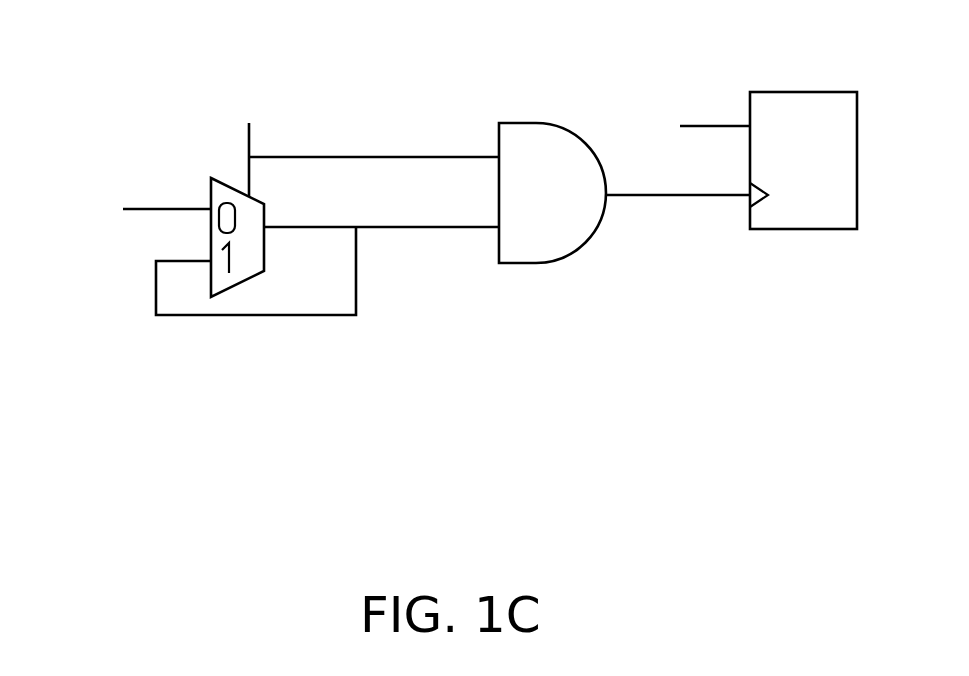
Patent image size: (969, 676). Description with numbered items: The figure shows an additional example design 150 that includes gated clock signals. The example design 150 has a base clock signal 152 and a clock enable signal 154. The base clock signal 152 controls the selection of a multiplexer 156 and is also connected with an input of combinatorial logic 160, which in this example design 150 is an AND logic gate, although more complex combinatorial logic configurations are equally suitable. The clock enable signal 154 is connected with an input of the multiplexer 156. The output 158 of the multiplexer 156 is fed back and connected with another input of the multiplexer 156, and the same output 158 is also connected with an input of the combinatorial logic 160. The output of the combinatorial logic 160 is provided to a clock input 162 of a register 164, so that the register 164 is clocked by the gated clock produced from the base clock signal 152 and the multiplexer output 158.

The example design 150 is at (256, 329).
The base clock signal 152 is at (318, 129).
The clock enable signal 154 is at (128, 223).
The multiplexer 156 is at (266, 240).
The output of multiplexer 158 is at (310, 227).
The combinatorial logic 160 is at (552, 193).
The clock input 162 is at (752, 201).
The register 164 is at (751, 153).